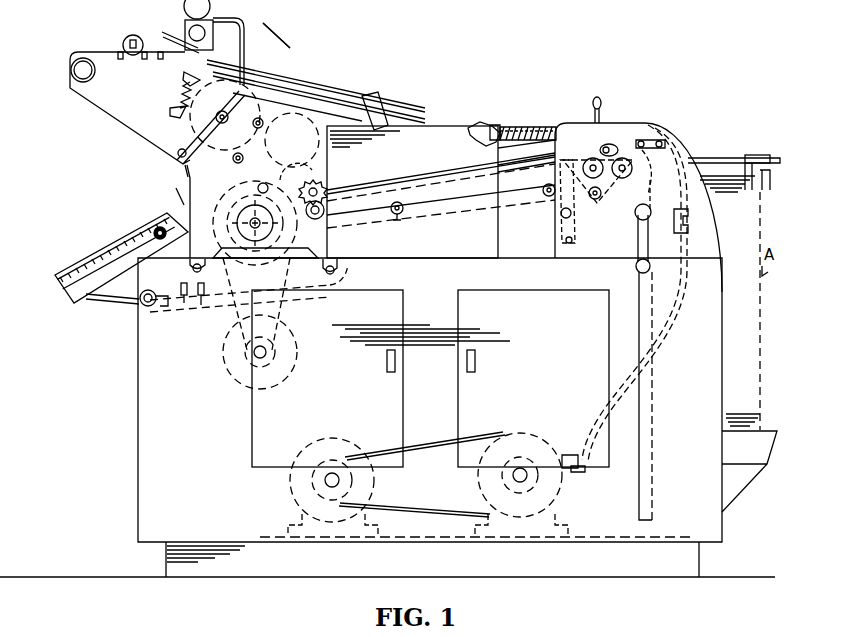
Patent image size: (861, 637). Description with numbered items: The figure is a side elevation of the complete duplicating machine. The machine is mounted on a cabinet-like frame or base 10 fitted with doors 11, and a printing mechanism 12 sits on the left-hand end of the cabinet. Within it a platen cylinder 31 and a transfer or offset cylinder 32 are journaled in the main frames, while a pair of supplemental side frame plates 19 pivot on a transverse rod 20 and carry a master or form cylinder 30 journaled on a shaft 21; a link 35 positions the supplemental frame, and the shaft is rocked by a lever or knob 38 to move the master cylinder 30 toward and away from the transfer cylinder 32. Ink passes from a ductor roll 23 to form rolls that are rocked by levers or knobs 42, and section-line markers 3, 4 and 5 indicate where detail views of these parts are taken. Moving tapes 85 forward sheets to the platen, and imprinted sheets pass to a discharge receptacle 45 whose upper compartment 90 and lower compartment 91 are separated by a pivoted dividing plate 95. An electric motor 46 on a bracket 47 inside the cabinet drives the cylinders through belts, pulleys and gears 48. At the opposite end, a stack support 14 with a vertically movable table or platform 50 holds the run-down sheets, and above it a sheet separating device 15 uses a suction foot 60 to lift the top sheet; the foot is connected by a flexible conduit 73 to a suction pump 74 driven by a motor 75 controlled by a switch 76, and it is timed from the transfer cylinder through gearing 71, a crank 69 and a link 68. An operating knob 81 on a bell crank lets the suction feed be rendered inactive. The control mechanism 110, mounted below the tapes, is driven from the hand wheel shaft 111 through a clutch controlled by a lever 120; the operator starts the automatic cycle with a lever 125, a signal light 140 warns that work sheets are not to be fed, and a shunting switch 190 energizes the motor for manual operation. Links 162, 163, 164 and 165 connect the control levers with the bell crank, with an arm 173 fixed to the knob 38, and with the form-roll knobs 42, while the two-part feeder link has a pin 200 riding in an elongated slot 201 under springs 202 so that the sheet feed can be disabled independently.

The section line 3 is at (166, 92).
The section line 4 is at (262, 24).
The section line 5 is at (198, 68).
The cabinet-like frame or base 10 is at (139, 427).
The doors 11 is at (470, 305).
The printing mechanism 12 is at (187, 178).
The stack or pile support 14 is at (735, 158).
The sheet separating device 15 is at (638, 321).
The supplemental side frame members or plates 19 is at (108, 118).
The transverse rod 20 is at (180, 151).
The shaft 21 is at (118, 52).
The ductor roll 23 is at (217, 37).
The master or form cylinder 30 is at (200, 177).
The platen cylinder 31 is at (295, 169).
The transfer or offset cylinder 32 is at (312, 150).
The link 35 is at (262, 121).
The lever or knob 38 is at (197, 30).
The lever or knob 42 is at (183, 77).
The discharge receptacle 45 is at (82, 260).
The electric motor 46 is at (224, 352).
The bracket 47 is at (184, 312).
The driving elements 48 is at (222, 225).
The table or platform 50 is at (749, 463).
The suction foot 60 is at (621, 143).
The link 68 is at (514, 175).
The crank 69 is at (326, 209).
The gearing 71 is at (326, 188).
The flexible conduit 73 is at (672, 122).
The suction pump 74 is at (528, 440).
The electric motor 75 is at (345, 447).
The switch 76 is at (182, 290).
The operating handle or knob 81 is at (602, 108).
The moving tapes 85 is at (510, 157).
The upper sheet receiving compartment 90 is at (117, 253).
The lower sheet receiving compartment 91 is at (73, 290).
The dividing plate 95 is at (128, 247).
The control mechanism 110 is at (441, 192).
The hand wheel shaft 111 is at (267, 166).
The manually operable lever 120 is at (402, 212).
The lever 125 is at (363, 93).
The signal light 140 is at (478, 126).
The link 162 is at (552, 130).
The link 163 is at (267, 72).
The link 164 is at (278, 93).
The link 165 is at (315, 100).
The arm 173 is at (272, 42).
The shunting switch 190 is at (201, 300).
The pin 200 is at (527, 150).
The elongated slot 201 is at (519, 126).
The springs 202 is at (494, 130).